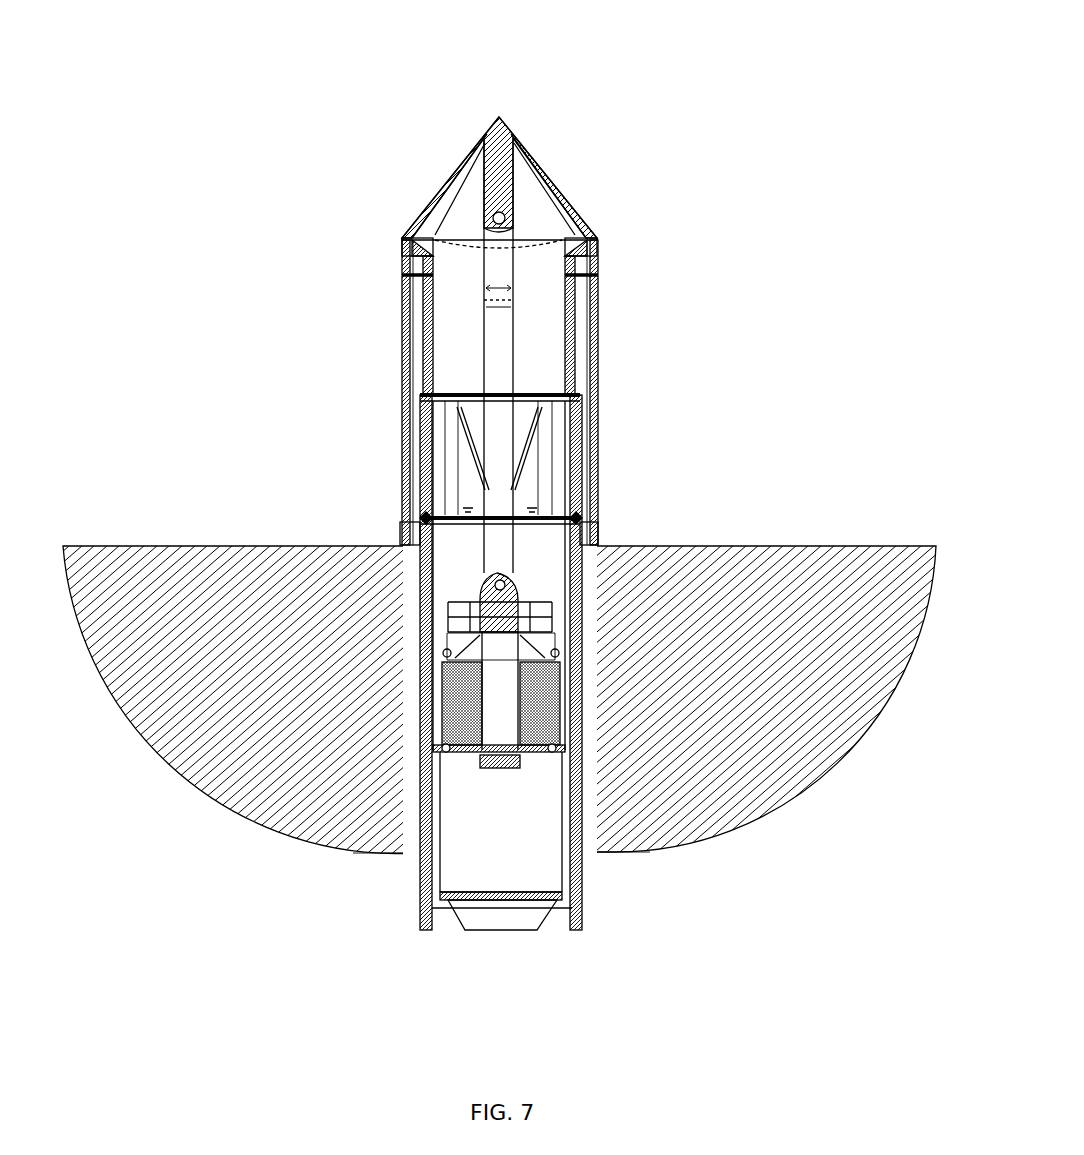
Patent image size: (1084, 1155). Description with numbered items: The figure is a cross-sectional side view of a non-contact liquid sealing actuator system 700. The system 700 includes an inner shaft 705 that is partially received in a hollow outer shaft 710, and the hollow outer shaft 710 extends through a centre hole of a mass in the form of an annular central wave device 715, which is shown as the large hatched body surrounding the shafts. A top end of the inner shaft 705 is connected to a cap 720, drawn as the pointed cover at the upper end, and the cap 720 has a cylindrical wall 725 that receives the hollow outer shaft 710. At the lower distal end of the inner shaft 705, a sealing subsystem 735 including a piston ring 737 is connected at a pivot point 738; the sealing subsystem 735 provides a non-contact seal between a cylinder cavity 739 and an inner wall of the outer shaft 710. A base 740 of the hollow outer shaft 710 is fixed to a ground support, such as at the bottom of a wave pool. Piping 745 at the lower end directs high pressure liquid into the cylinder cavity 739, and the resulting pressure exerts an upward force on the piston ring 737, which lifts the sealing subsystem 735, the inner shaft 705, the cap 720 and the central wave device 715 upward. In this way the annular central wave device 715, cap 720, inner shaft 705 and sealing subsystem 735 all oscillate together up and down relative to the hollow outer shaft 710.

The non-contact liquid sealing actuator system 700 is at (737, 203).
The inner shaft 705 is at (500, 373).
The hollow outer shaft 710 is at (420, 872).
The annular central wave device 715 is at (776, 562).
The cap 720 is at (553, 190).
The cylindrical wall 725 is at (402, 393).
The sealing subsystem 735 is at (498, 777).
The piston ring 737 is at (537, 753).
The pivot point 738 is at (506, 583).
The cylinder cavity 739 is at (521, 874).
The base 740 is at (583, 922).
The piping 745 is at (507, 921).